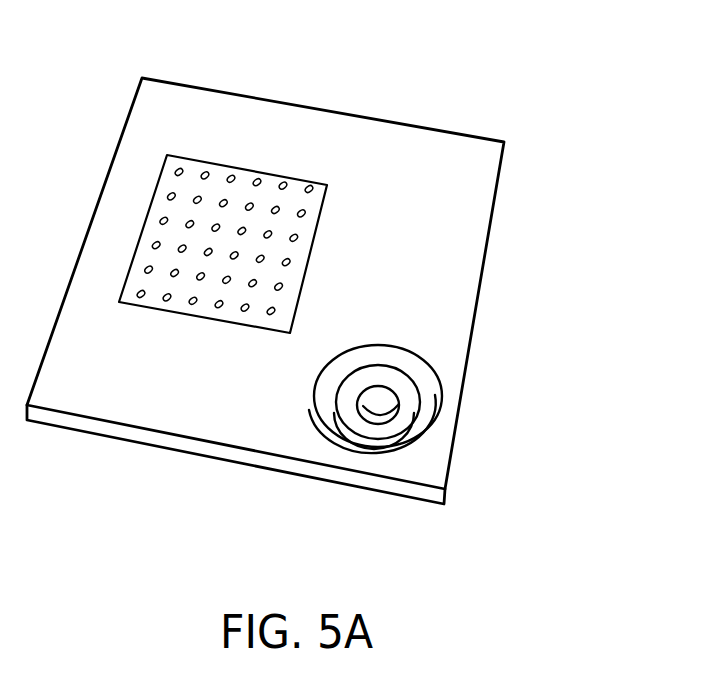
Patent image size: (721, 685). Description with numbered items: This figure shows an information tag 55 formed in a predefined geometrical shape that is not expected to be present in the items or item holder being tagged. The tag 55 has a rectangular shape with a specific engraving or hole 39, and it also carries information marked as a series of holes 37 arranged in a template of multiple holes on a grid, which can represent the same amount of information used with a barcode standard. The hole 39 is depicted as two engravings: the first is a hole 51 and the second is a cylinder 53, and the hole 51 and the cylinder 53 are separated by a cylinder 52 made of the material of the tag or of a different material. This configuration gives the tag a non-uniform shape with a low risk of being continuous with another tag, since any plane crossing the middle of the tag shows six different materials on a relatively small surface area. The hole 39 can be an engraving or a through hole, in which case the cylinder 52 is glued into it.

The tag 55 is at (535, 185).
The holes 37 is at (307, 183).
The hole 39 is at (437, 352).
The hole 51 is at (382, 408).
The cylinder 52 is at (410, 407).
The cylinder 53 is at (422, 432).